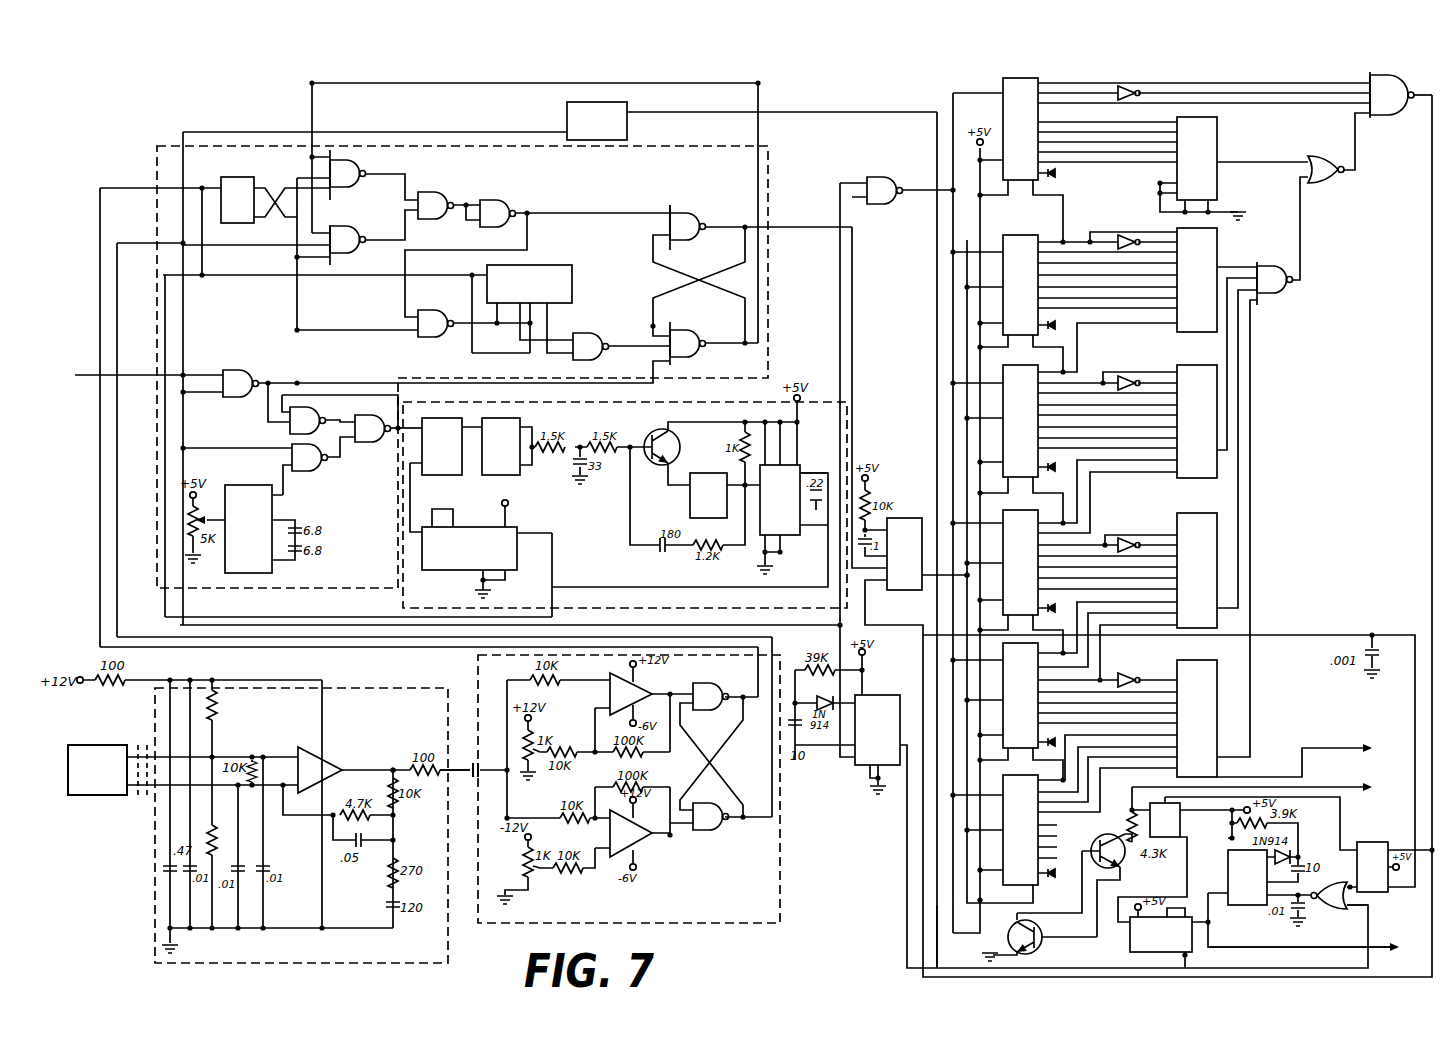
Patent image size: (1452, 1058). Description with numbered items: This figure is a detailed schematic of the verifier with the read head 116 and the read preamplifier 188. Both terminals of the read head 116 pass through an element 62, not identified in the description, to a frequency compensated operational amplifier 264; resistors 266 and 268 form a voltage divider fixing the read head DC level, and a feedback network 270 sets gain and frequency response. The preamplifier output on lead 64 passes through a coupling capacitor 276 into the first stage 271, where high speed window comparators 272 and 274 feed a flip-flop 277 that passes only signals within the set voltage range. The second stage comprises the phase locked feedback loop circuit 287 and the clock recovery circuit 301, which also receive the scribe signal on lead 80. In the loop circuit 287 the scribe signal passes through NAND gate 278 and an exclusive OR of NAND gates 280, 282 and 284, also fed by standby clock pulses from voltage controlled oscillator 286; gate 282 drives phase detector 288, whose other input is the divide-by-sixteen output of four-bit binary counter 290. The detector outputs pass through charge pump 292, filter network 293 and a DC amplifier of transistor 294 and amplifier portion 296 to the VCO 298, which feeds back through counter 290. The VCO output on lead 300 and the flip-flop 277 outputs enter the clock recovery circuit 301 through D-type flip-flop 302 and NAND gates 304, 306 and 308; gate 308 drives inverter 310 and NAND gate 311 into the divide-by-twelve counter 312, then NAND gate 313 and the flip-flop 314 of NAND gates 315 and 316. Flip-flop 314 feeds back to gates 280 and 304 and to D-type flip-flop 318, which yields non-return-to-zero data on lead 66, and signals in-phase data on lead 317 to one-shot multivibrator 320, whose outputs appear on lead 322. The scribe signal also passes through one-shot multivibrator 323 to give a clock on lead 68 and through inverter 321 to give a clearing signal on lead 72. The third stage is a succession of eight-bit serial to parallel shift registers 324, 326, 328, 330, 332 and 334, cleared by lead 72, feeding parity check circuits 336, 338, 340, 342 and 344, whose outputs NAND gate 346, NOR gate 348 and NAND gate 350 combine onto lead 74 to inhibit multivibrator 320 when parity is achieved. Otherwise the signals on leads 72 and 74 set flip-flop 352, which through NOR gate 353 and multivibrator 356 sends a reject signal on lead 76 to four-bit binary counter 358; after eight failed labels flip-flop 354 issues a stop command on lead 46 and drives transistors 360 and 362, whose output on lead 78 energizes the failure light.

The clock recovery circuit 301 is at (163, 146).
The lead 300 is at (290, 588).
The phase locked feedback loop circuit 287 is at (403, 592).
The read preamplifier 188 is at (378, 688).
The first stage 271 is at (706, 926).
The D-type edge triggered flip-flop 302 is at (238, 200).
The NAND gate 304 is at (346, 180).
The NAND gate 306 is at (352, 230).
The NAND gate 308 is at (436, 192).
The inverter 310 is at (496, 200).
The NAND gate 311 is at (437, 304).
The divide by 12 counter 312 is at (529, 284).
The NAND gate 313 is at (587, 334).
The flip-flop 314 is at (690, 210).
The NAND gate 315 is at (670, 230).
The NAND gate 316 is at (688, 330).
The lead 317 is at (795, 222).
The D-type edge triggered flip-flop 318 is at (597, 121).
The NAND gate 278 is at (240, 370).
The NAND gate 280 is at (320, 415).
The NAND gate 282 is at (370, 442).
The NAND gate 284 is at (312, 471).
The voltage controlled oscillator 286 is at (248, 529).
The phase detector 288 is at (442, 446).
The 4-bit binary counter 290 is at (469, 535).
The charge pump 292 is at (501, 446).
The filter network 293 is at (582, 440).
The transistor 294 is at (656, 430).
The amplifier portion 296 is at (705, 478).
The VCO 298 is at (802, 465).
The lead 66 is at (882, 112).
The lead 72 is at (928, 190).
The lead 80 is at (840, 272).
The lead 74 is at (922, 652).
The lead 68 is at (907, 843).
The lead 76 is at (1310, 936).
The lead 78 is at (1307, 752).
The lead 46 is at (1265, 789).
The lead 64 is at (458, 764).
The connector 62 is at (141, 745).
The inverter 321 is at (880, 177).
The one-shot multivibrator 320 is at (900, 518).
The lead 322 is at (932, 590).
The one-shot multivibrator 323 is at (877, 730).
The 8-bit serial to parallel shift register 324 is at (1020, 129).
The 8-bit serial to parallel shift register 326 is at (1020, 285).
The 8-bit serial to parallel shift register 328 is at (1020, 421).
The 8-bit serial to parallel shift register 330 is at (1020, 562).
The 8-bit serial to parallel shift register 332 is at (1020, 695).
The 8-bit serial to parallel shift register 334 is at (1020, 830).
The parity check circuit 336 is at (1217, 132).
The parity check circuit 338 is at (1217, 249).
The parity check circuit 340 is at (1203, 365).
The parity check circuit 342 is at (1203, 513).
The parity check circuit 344 is at (1188, 660).
The NAND gate 346 is at (1283, 293).
The NOR gate 348 is at (1332, 182).
The NAND gate 350 is at (1398, 72).
The flip-flop 352 is at (1373, 842).
The NOR gate 353 is at (1335, 908).
The flip-flop 354 is at (1180, 825).
The multivibrator 356 is at (1228, 870).
The 4-bit binary counter 358 is at (1130, 947).
The transistor 360 is at (1123, 858).
The transistor 362 is at (1008, 935).
The read head 116 is at (75, 745).
The frequency compensated operational amplifier 264 is at (330, 760).
The resistor 266 is at (216, 702).
The resistor 268 is at (213, 825).
The feedback network 270 is at (395, 765).
The high speed window comparator 272 is at (646, 688).
The high speed window comparator 274 is at (648, 840).
The coupling capacitor 276 is at (482, 776).
The flip-flop 277 is at (713, 845).